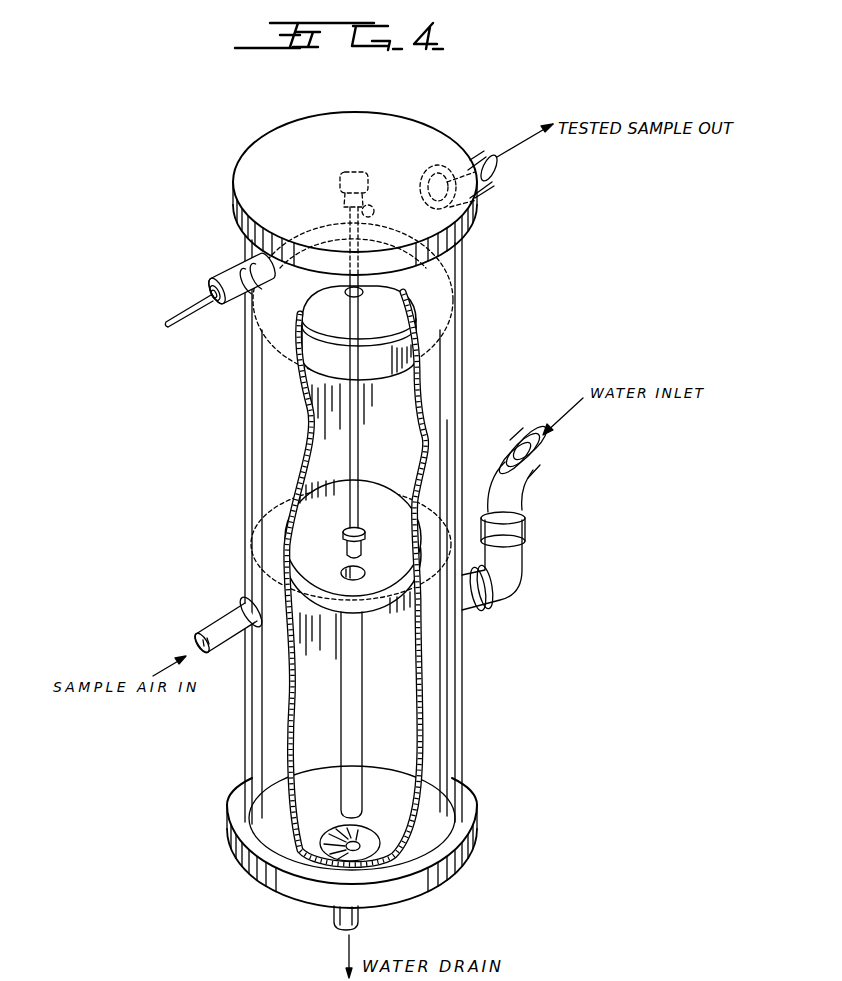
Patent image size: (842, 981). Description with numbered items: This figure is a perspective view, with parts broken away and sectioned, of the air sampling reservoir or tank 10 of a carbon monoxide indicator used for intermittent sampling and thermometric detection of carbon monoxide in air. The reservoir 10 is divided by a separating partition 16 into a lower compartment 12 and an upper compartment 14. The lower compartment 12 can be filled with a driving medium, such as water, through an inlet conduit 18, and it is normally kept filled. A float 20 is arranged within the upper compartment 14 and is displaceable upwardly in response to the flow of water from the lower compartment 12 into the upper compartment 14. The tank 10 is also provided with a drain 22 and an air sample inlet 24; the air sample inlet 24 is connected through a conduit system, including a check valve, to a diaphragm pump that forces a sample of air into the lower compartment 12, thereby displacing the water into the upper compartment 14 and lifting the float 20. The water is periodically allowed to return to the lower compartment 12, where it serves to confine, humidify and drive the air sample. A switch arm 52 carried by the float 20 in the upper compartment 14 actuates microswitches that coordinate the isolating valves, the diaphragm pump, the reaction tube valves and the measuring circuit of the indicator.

The air sampling reservoir 10 is at (511, 596).
The lower compartment 12 is at (407, 698).
The upper compartment 14 is at (401, 434).
The separating partition 16 is at (385, 612).
The inlet conduit 18 is at (522, 500).
The float 20 is at (381, 378).
The drain 22 is at (360, 918).
The air sample inlet 24 is at (219, 597).
The switch arm 52 is at (219, 306).